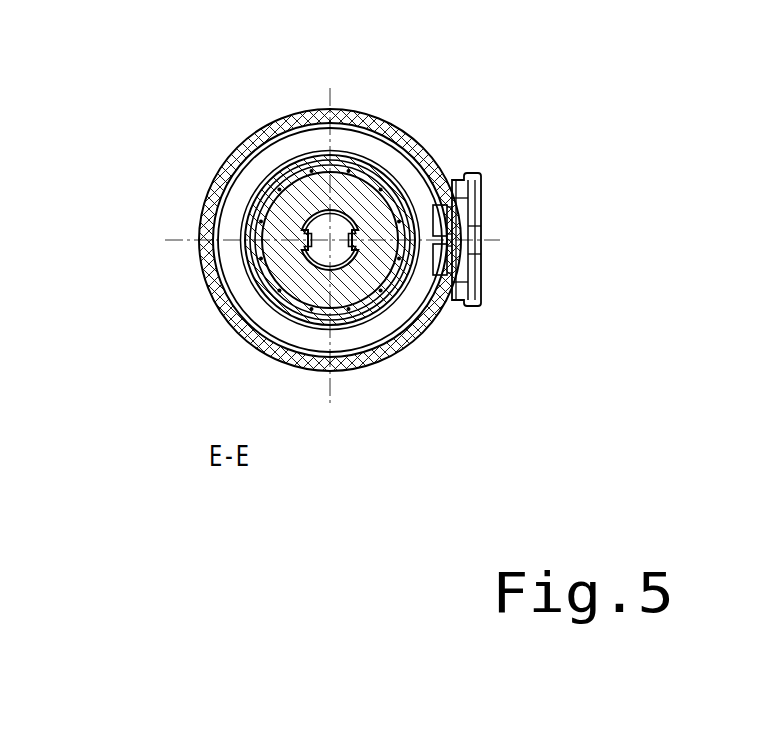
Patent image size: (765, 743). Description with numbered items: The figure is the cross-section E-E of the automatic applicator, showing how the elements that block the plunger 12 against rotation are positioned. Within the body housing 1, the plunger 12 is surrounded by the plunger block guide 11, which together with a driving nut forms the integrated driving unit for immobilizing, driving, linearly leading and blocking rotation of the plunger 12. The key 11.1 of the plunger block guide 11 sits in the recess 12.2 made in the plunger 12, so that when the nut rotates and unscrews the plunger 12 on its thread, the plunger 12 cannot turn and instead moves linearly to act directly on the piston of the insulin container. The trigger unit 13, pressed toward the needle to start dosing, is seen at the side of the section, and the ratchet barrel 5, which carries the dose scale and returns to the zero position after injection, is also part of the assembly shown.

The body housing 1 is at (269, 185).
The plunger block guide 11 is at (263, 230).
The key 11.1 is at (527, 255).
The plunger 12 is at (409, 286).
The recess 12.2 is at (394, 181).
The trigger unit 13 is at (534, 192).
The ratchet barrel 5 is at (246, 240).